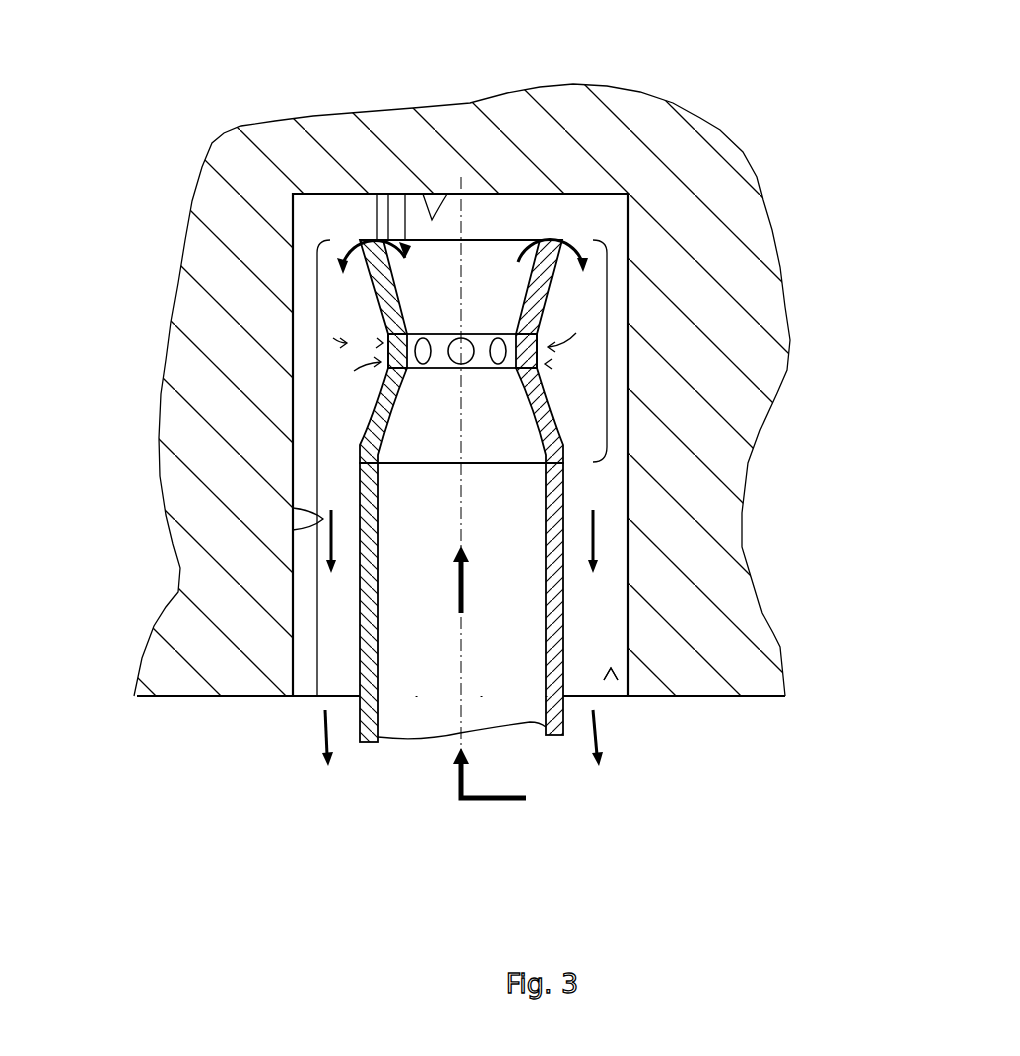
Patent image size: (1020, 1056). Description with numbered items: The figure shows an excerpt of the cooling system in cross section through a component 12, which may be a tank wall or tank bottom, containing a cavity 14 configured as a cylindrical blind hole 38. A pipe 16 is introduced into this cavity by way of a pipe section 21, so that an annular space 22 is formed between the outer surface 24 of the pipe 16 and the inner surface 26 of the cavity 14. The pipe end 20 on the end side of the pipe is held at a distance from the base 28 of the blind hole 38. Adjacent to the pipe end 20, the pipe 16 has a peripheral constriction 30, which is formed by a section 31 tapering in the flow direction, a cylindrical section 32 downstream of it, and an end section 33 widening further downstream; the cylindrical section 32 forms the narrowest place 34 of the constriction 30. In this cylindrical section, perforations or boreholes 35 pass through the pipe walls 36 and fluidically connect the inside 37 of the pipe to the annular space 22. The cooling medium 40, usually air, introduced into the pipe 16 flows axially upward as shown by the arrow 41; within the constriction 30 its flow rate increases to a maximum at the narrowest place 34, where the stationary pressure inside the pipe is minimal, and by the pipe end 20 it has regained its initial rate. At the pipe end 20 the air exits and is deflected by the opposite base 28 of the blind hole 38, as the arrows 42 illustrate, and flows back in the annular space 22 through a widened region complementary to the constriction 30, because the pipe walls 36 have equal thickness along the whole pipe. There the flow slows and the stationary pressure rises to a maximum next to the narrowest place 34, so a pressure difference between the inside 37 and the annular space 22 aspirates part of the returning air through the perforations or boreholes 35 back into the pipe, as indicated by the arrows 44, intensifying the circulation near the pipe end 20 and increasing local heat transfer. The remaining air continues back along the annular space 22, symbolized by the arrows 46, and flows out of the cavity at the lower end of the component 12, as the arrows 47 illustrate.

The component 12 is at (610, 128).
The cavity 14 is at (611, 668).
The pipe 16 is at (310, 648).
The pipe end 20 is at (462, 250).
The pipe section 21 is at (317, 463).
The annular space 22 is at (586, 630).
The outer surface 24 is at (363, 592).
The inner surface 26 is at (322, 518).
The base 28 is at (432, 220).
The constriction 30 is at (462, 316).
The tapering section 31 is at (433, 415).
The cylindrical section 32 is at (381, 338).
The end section 33 is at (433, 295).
The narrowest place 34 is at (381, 343).
The perforations or boreholes 35 is at (380, 332).
The pipe walls 36 is at (365, 640).
The inside of the pipe 37 is at (494, 630).
The blind hole 38 is at (611, 668).
The cooling medium 40 is at (526, 798).
The arrow 41 is at (597, 547).
The arrows 42 is at (578, 230).
The arrows 44 is at (575, 372).
The arrows 46 is at (467, 575).
The arrows 47 is at (598, 742).